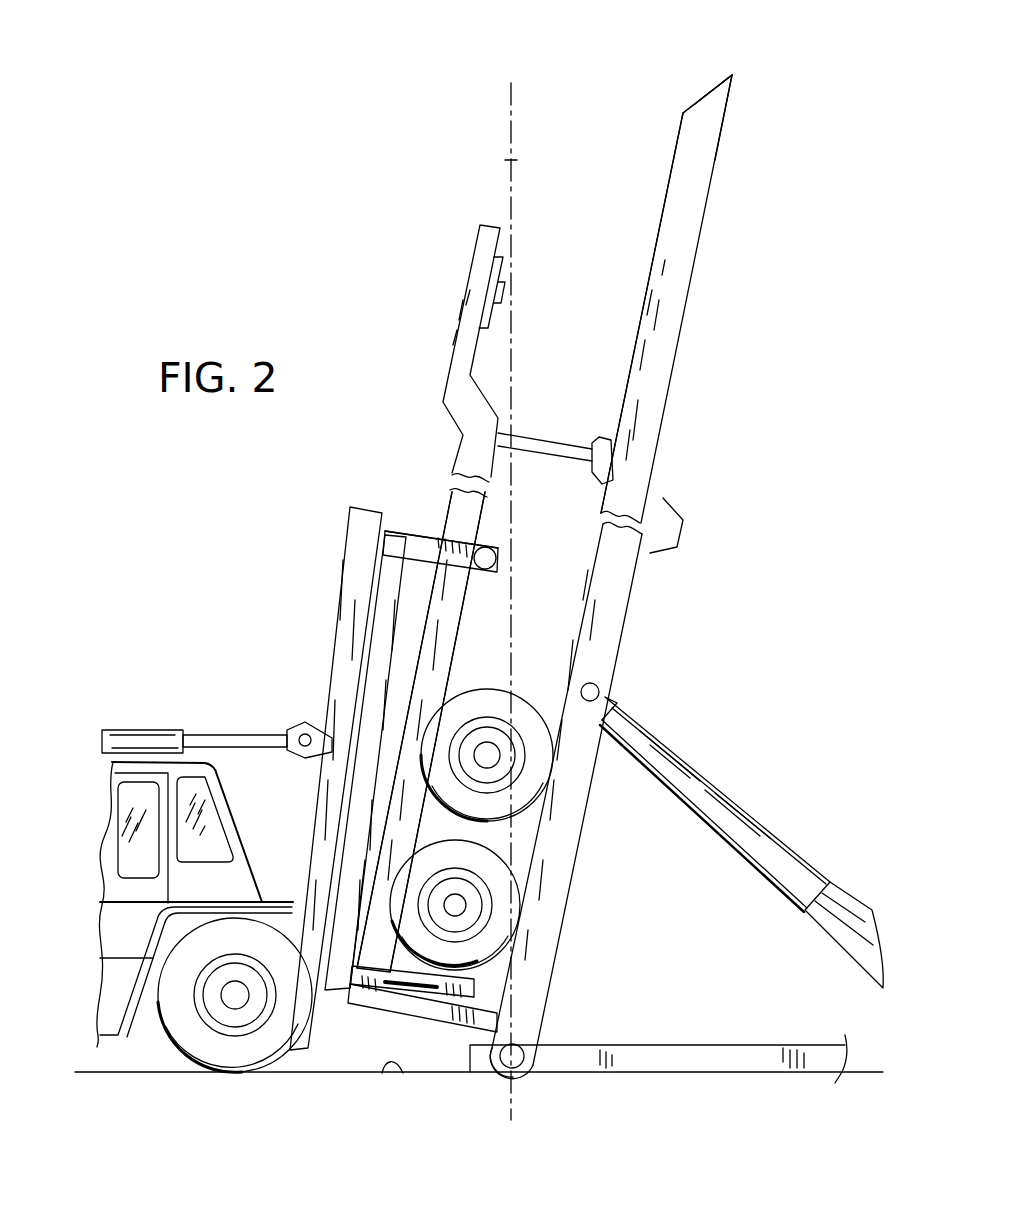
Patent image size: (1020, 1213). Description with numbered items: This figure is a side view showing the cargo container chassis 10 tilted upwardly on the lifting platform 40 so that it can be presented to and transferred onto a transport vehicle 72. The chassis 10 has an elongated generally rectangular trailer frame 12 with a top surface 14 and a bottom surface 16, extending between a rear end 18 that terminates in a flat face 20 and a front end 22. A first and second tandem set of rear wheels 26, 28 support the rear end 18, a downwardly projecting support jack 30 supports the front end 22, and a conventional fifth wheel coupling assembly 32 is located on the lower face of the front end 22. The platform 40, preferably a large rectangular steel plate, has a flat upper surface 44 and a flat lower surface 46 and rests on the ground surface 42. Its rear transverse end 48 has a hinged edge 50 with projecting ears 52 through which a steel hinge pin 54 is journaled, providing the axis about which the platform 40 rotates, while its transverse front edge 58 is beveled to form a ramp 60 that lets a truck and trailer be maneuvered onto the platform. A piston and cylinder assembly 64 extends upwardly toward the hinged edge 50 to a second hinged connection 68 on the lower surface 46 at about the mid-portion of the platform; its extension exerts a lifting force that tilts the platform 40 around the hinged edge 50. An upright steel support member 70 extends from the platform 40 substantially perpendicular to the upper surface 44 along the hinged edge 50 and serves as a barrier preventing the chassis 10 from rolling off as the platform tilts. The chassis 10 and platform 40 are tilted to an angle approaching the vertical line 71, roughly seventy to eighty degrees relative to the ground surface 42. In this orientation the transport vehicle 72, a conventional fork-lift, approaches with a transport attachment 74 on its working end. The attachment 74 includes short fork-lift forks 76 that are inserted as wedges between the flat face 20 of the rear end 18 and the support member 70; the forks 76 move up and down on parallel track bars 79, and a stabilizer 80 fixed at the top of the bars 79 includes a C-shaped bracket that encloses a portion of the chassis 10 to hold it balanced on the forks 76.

The cargo container chassis 10 is at (433, 432).
The trailer frame 12 is at (437, 660).
The top surface 14 is at (420, 630).
The bottom surface 16 is at (463, 640).
The rear end 18 is at (378, 920).
The flat face 20 is at (375, 967).
The front end 22 is at (472, 300).
The first tandem set of rear wheels 26 is at (503, 890).
The second tandem set of rear wheels 28 is at (528, 787).
The support jack 30 is at (562, 449).
The fifth wheel coupling assembly 32 is at (500, 297).
The lifting platform 40 is at (694, 130).
The ground surface 42 is at (400, 1063).
The flat upper surface 44 is at (650, 280).
The flat lower surface 46 is at (695, 265).
The rear transverse end 48 is at (538, 985).
The hinged edge 50 is at (550, 1053).
The projecting ears 52 is at (497, 1063).
The hinge pin 54 is at (530, 1060).
The transverse front edge 58 is at (718, 118).
The ramp 60 is at (708, 93).
The piston and cylinder assembly 64 is at (853, 910).
The second hinged connection 68 is at (599, 689).
The upright support member 70 is at (440, 1012).
The vertical line 71 is at (510, 160).
The transport vehicle 72 is at (98, 843).
The transport attachment 74 is at (425, 527).
The fork-lift forks 76 is at (400, 984).
The track bars 79 is at (372, 718).
The stabilizer 80 is at (420, 560).